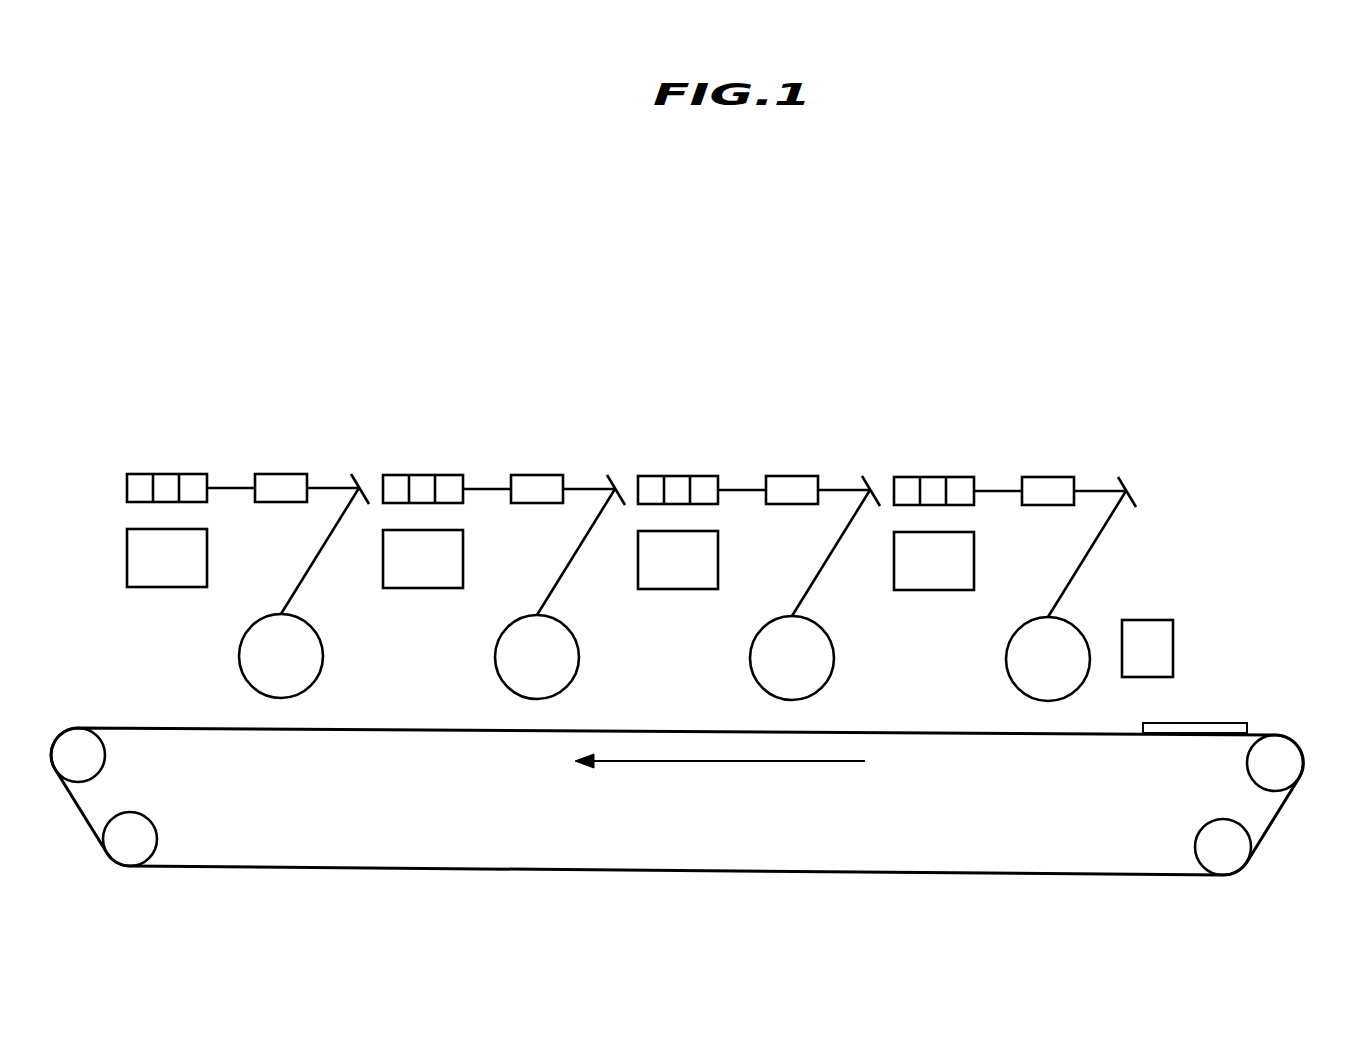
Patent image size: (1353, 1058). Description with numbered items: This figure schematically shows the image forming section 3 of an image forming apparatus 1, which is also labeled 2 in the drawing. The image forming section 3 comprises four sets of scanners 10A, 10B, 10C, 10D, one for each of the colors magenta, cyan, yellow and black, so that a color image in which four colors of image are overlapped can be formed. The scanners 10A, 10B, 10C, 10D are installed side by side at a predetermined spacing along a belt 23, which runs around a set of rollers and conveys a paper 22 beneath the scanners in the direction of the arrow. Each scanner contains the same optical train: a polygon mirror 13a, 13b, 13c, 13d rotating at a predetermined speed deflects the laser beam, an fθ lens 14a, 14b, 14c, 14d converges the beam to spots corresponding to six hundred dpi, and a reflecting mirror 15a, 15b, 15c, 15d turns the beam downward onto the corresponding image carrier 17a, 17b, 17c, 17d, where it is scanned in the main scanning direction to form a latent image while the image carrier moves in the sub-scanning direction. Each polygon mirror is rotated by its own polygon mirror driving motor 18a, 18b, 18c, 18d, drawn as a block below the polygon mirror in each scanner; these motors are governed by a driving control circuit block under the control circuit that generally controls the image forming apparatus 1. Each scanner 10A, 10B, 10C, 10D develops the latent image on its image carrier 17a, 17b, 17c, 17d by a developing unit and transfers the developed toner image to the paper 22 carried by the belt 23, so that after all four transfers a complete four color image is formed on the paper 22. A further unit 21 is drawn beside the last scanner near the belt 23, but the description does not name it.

The image forming apparatus 1 is at (608, 211).
The image forming system 2 is at (628, 196).
The image forming section 3 is at (743, 298).
The scanner 10A is at (1012, 413).
The scanner 10B is at (756, 412).
The scanner 10C is at (501, 411).
The scanner 10D is at (245, 410).
The polygon mirror 13a is at (964, 477).
The polygon mirror 13b is at (708, 476).
The polygon mirror 13c is at (453, 475).
The polygon mirror 13d is at (197, 474).
The fθ lens 14a is at (1067, 477).
The fθ lens 14b is at (811, 476).
The fθ lens 14c is at (556, 475).
The fθ lens 14d is at (300, 474).
The reflecting mirror 15a is at (1134, 497).
The reflecting mirror 15b is at (878, 496).
The reflecting mirror 15c is at (623, 495).
The reflecting mirror 15d is at (367, 494).
The image carrier 17a is at (1042, 616).
The image carrier 17b is at (786, 615).
The image carrier 17c is at (531, 614).
The image carrier 17d is at (275, 613).
The polygon mirror driving motor 18a is at (960, 595).
The polygon mirror driving motor 18b is at (704, 594).
The polygon mirror driving motor 18c is at (449, 593).
The polygon mirror driving motor 18d is at (193, 592).
The fixing unit 21 is at (1148, 620).
The paper 22 is at (1209, 722).
The belt 23 is at (870, 731).